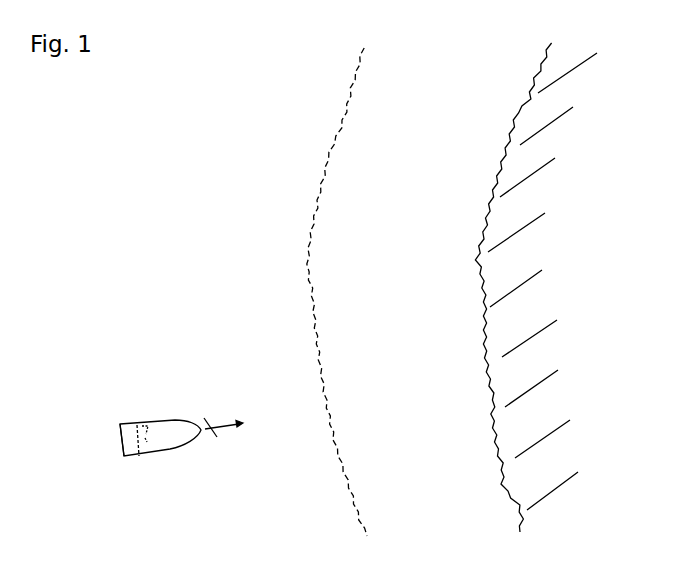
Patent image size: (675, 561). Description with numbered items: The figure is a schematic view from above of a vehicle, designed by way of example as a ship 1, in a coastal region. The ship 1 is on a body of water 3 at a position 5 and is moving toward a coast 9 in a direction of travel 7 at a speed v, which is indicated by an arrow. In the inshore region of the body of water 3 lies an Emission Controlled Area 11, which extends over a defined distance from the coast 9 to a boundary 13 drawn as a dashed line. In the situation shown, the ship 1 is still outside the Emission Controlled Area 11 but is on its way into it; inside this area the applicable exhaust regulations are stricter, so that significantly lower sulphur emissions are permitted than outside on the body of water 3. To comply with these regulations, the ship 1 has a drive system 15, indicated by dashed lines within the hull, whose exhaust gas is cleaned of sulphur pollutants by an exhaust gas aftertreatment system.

The ship 1 is at (163, 418).
The body of water 3 is at (216, 249).
The position 5 is at (207, 427).
The direction of travel 7 is at (229, 430).
The coast 9 is at (601, 272).
The Emission Controlled Area 11 is at (421, 277).
The boundary 13 is at (358, 68).
The drive system 15 is at (137, 455).